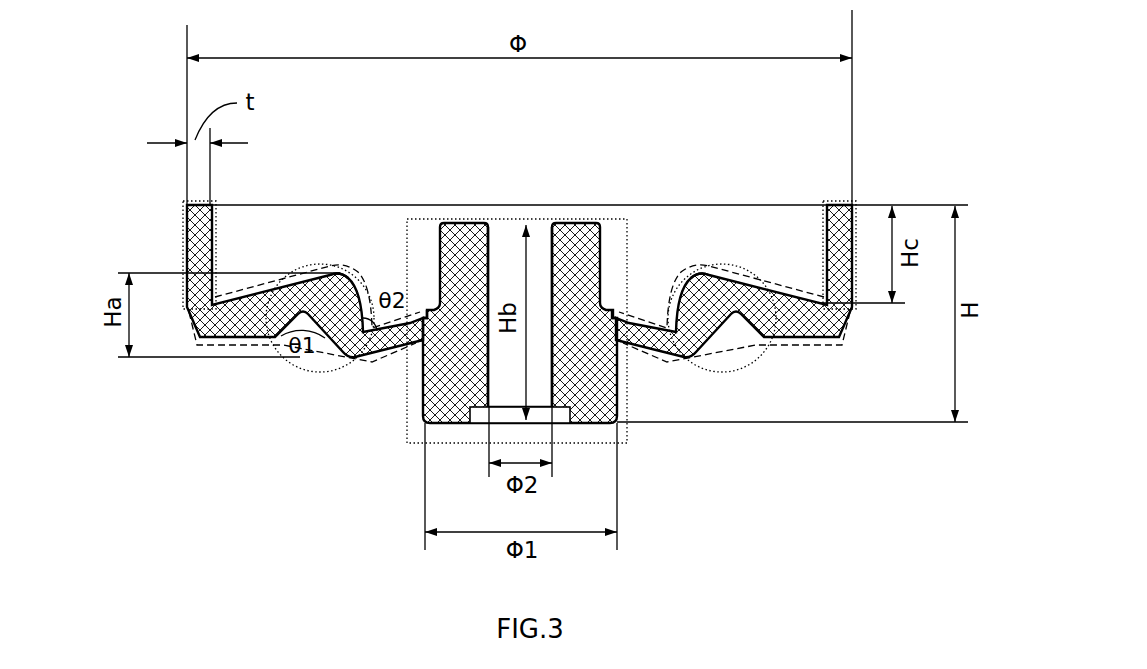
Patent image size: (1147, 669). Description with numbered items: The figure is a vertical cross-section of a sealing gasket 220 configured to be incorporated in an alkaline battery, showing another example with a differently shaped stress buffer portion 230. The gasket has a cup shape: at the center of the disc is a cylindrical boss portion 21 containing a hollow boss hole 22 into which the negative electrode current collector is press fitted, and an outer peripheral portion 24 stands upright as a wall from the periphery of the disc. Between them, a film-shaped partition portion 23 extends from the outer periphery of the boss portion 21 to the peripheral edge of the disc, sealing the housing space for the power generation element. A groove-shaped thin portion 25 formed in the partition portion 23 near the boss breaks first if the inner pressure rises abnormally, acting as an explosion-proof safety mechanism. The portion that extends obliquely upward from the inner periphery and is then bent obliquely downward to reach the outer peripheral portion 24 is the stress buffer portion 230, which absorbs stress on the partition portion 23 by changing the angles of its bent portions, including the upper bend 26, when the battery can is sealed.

The sealing gasket 220 is at (877, 157).
The boss portion 21 is at (628, 431).
The boss hole 22 is at (515, 226).
The partition portion 23 is at (262, 295).
The outer peripheral portion 24 is at (182, 248).
The thin portion 25 is at (419, 340).
The bent portion 26 is at (345, 273).
The stress buffer portion 230 is at (318, 264).